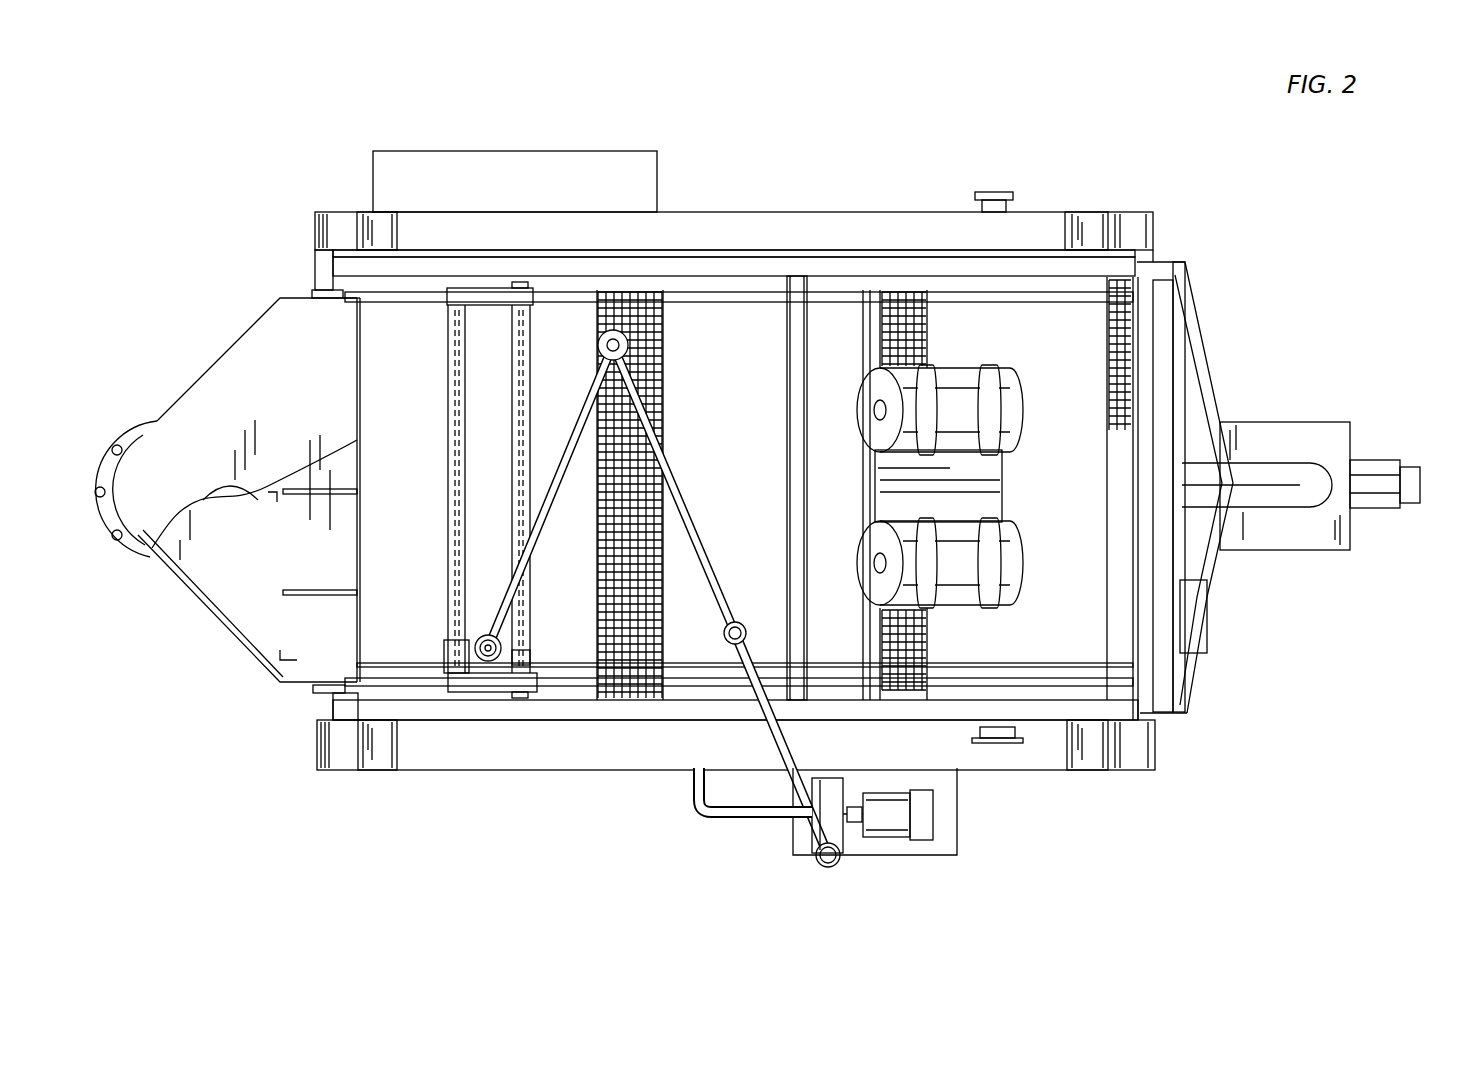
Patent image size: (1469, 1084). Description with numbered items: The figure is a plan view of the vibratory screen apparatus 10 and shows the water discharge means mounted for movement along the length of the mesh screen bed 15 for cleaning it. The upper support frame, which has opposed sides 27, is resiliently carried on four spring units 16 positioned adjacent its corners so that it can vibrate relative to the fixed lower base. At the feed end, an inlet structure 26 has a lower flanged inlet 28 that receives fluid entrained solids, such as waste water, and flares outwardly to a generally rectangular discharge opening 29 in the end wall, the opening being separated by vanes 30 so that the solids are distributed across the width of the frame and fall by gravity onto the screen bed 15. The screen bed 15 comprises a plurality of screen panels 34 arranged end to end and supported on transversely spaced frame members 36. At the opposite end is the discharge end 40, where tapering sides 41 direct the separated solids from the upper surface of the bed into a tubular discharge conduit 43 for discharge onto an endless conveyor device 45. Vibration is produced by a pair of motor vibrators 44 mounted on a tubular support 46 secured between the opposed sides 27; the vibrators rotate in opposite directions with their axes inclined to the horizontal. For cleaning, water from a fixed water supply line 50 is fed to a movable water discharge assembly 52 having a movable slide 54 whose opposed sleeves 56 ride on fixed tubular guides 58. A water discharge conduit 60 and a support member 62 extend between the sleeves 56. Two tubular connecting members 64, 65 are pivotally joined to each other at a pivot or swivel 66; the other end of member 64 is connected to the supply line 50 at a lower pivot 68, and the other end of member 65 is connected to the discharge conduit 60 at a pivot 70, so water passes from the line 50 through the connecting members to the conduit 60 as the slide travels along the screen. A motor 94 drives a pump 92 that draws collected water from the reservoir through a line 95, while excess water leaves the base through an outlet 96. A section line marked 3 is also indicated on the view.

The vibratory screen apparatus 10 is at (1140, 200).
The mesh screen bed 15 is at (727, 316).
The spring units 16 is at (380, 235).
The inlet structure 26 is at (196, 612).
The opposed sides 27 is at (783, 268).
The lower flanged inlet 28 is at (135, 562).
The discharge opening 29 is at (360, 462).
The section line 3- 3 is at (83, 492).
The vanes 30 is at (317, 588).
The screen panels 34 is at (539, 391).
The transversely spaced frame members 36 is at (622, 588).
The discharge end 40 is at (1147, 342).
The tapering sides 41 is at (1212, 370).
The tubular discharge conduit 43 is at (1300, 470).
The motor vibrators 44 is at (1020, 415).
The endless conveyor device 45 is at (1003, 483).
The tubular support 46 is at (790, 393).
The water supply line 50 is at (782, 741).
The water discharge assembly 52 is at (441, 629).
The movable slide 54 is at (532, 656).
The opposed sleeves 56 is at (500, 303).
The fixed tubular guides 58 is at (678, 303).
The water discharge conduit 60 is at (513, 425).
The support member 62 is at (448, 358).
The tubular connecting member 64 is at (663, 452).
The tubular connecting member 65 is at (555, 503).
The pivot or swivel 66 is at (611, 489).
The lower pivot 68 is at (740, 620).
The pivot 70 is at (486, 634).
The pump 92 is at (810, 860).
The motor 94 is at (888, 840).
The line 95 is at (732, 818).
The outlet 96 is at (598, 163).